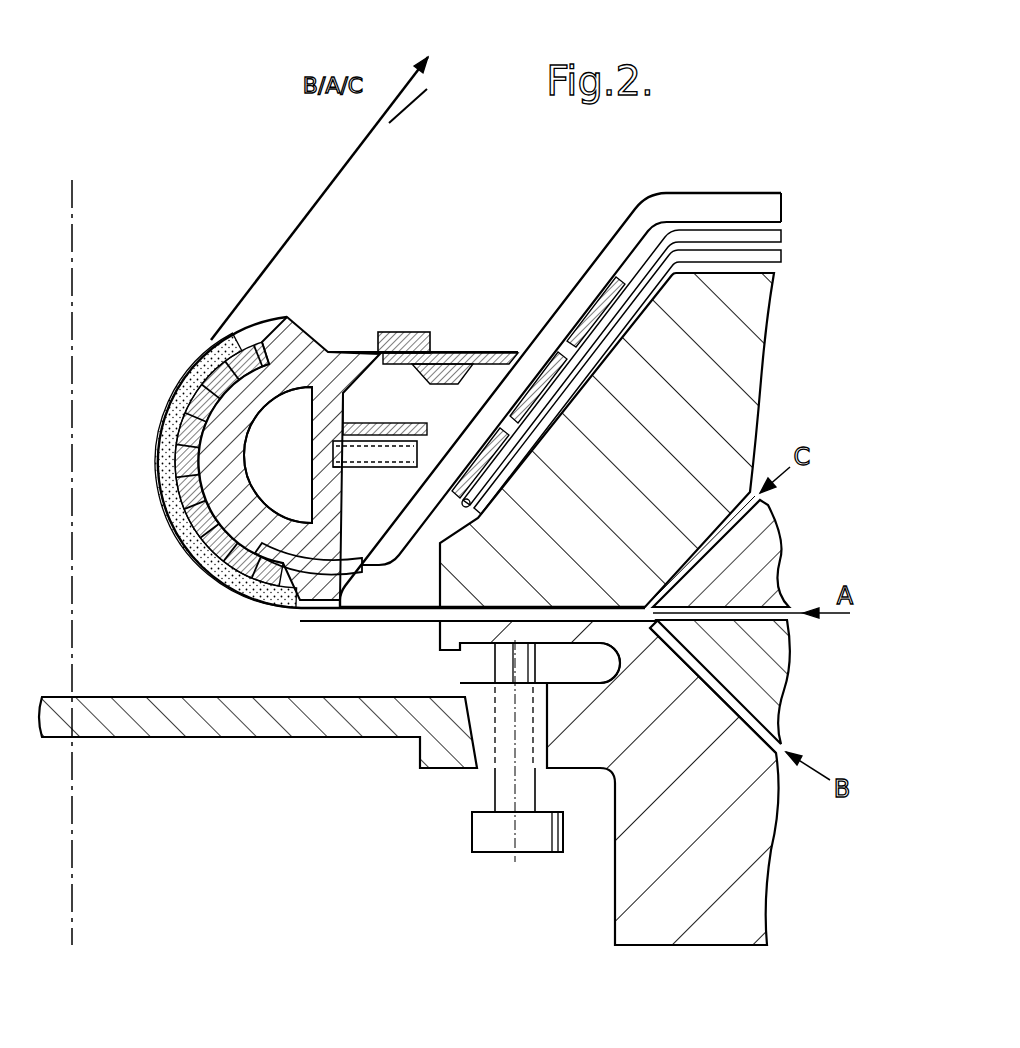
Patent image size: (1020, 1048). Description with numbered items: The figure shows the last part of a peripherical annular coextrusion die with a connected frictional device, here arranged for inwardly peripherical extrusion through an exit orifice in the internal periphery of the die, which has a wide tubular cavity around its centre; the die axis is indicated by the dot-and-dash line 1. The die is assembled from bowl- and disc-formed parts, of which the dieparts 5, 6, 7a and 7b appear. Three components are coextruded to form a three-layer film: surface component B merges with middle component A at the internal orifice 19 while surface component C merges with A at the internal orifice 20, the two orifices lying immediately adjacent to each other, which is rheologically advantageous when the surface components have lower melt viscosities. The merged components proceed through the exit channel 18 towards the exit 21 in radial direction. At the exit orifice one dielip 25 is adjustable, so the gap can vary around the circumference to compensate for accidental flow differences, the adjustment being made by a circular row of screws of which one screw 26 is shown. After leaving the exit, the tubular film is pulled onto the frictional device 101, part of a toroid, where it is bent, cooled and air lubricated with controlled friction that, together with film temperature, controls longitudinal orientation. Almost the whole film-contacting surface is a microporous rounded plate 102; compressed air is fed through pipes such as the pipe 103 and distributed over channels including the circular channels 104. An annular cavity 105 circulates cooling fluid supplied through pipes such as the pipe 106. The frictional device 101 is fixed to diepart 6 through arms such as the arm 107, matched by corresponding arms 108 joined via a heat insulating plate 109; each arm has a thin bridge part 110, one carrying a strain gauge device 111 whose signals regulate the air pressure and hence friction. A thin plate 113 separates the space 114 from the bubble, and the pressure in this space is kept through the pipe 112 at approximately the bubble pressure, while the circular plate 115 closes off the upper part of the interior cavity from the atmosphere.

The dot-dash line 1 is at (72, 244).
The diepart 5 is at (752, 840).
The diepart 6 is at (765, 375).
The diepart 7a is at (768, 672).
The diepart 7b is at (766, 532).
The exit channel 18 is at (573, 612).
The internal orifice 19 is at (650, 624).
The internal orifice 20 is at (650, 600).
The exit 21 is at (430, 612).
The dielip 25 is at (455, 650).
The screw 26 is at (488, 831).
The frictional device 101 is at (280, 332).
The rounded plate 102 is at (165, 466).
The pipe 103 is at (786, 238).
The channels 104 is at (196, 384).
The annular cavity 105 is at (255, 471).
The pipe 106 is at (786, 206).
The arm 107 is at (365, 366).
The arm 108 is at (447, 378).
The heat insulating plate 109 is at (466, 352).
The bridge part 110 is at (341, 421).
The strain gauge device 111 is at (412, 333).
The pipe 112 is at (786, 260).
The thin plate 113 is at (372, 432).
The space 114 is at (350, 521).
The circular plate 115 is at (283, 720).